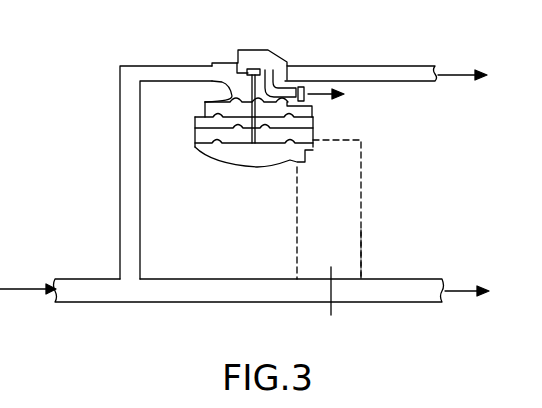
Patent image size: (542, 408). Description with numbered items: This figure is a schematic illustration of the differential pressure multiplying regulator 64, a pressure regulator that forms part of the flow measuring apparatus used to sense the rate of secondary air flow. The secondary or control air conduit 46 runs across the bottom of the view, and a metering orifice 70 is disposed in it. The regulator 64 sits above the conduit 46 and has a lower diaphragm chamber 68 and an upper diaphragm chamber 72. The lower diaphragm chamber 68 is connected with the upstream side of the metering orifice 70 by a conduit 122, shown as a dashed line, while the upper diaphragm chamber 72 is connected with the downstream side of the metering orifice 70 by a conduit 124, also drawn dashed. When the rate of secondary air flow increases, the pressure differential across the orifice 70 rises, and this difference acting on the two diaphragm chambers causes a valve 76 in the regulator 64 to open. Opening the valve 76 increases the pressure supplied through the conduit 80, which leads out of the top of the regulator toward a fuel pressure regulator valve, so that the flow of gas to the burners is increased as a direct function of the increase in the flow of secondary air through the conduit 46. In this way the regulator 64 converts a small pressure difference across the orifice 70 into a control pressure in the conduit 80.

The secondary air conduit 46 is at (432, 293).
The differential pressure multiplying regulator 64 is at (178, 160).
The lower diaphragm chamber 68 is at (252, 157).
The metering orifice 70 is at (331, 289).
The upper diaphragm chamber 72 is at (318, 138).
The valve 76 is at (256, 70).
The conduit 80 is at (410, 66).
The conduit 122 is at (297, 226).
The conduit 124 is at (362, 262).